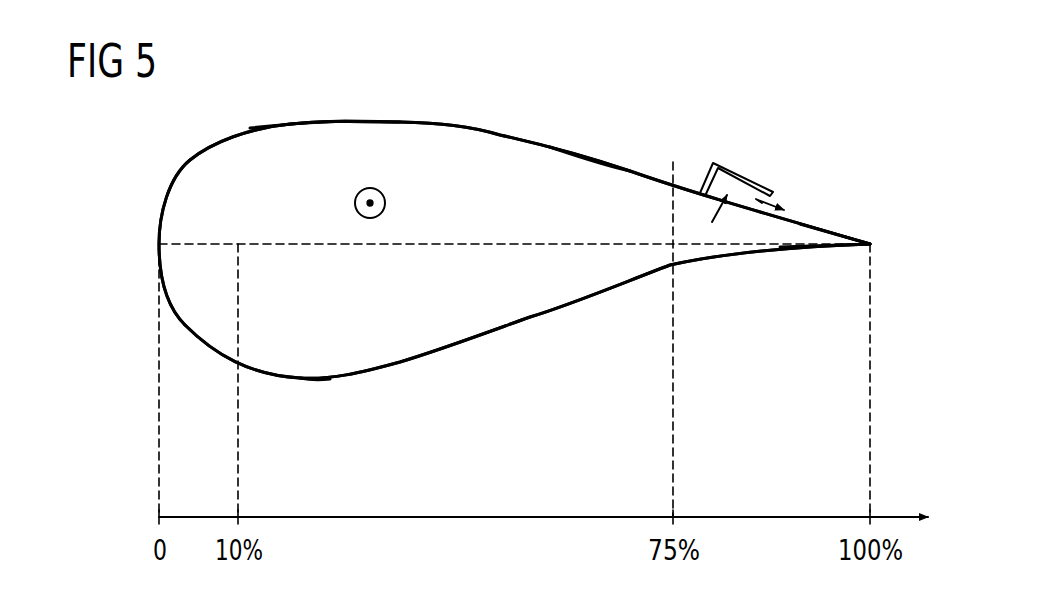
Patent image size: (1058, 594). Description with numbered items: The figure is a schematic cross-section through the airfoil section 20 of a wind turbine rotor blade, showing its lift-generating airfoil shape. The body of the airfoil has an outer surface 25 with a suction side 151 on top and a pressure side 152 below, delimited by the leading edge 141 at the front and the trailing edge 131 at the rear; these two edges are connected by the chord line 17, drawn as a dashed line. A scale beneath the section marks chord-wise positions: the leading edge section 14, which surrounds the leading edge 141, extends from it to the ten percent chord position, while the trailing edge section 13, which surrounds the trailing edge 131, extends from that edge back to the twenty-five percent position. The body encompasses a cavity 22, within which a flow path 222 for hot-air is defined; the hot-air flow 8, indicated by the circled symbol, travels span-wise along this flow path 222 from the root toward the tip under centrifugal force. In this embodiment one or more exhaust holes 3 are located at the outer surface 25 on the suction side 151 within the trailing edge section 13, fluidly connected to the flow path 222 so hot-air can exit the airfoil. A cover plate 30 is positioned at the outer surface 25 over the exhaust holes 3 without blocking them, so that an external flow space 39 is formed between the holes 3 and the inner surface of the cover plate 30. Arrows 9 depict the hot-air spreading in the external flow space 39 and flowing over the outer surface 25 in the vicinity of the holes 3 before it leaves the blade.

The exhaust hole 3 is at (712, 207).
The flow of hot-air 8 is at (385, 203).
The hot-air flow arrows 9 is at (762, 203).
The trailing edge section 13 is at (855, 367).
The leading edge section 14 is at (182, 390).
The chord line 17 is at (222, 243).
The airfoil section 20 is at (128, 379).
The cavity 22 is at (292, 152).
The outer surface 25 is at (600, 160).
The cover plate 30 is at (705, 158).
The external flow space 39 is at (782, 193).
The trailing edge 131 is at (872, 243).
The leading edge 141 is at (157, 247).
The suction side 151 is at (447, 122).
The pressure side 152 is at (447, 352).
The flow path 222 is at (560, 212).